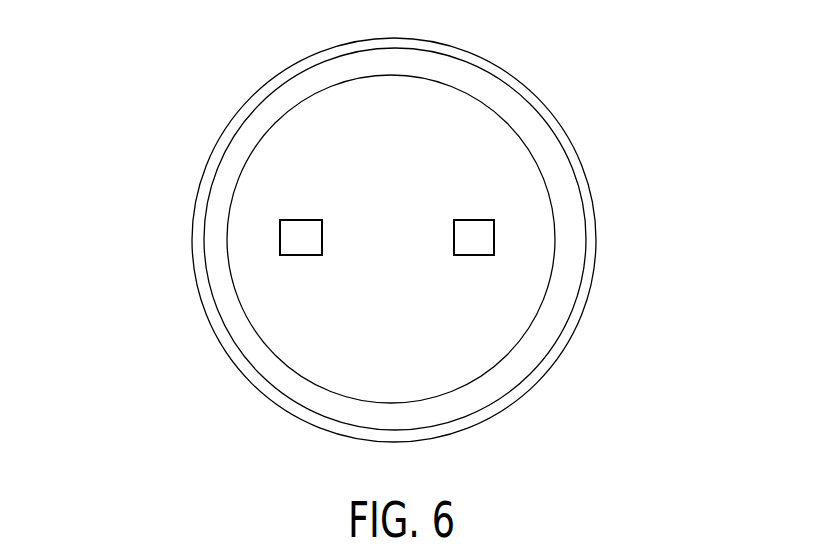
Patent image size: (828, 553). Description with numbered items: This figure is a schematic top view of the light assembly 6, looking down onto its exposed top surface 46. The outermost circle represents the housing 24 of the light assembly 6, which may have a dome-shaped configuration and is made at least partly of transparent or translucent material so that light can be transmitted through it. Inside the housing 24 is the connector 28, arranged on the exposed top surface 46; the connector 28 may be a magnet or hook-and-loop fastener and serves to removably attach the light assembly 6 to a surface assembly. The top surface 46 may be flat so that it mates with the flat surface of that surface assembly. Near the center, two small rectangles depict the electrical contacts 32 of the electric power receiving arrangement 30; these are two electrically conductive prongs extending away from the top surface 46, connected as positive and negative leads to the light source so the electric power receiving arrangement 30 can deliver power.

The light assembly 6 is at (143, 108).
The housing 24 is at (582, 167).
The connector 28 is at (507, 102).
The top surface 46 is at (313, 112).
The electric power receiving arrangement 30 is at (300, 255).
The electrical contacts 32 is at (417, 295).